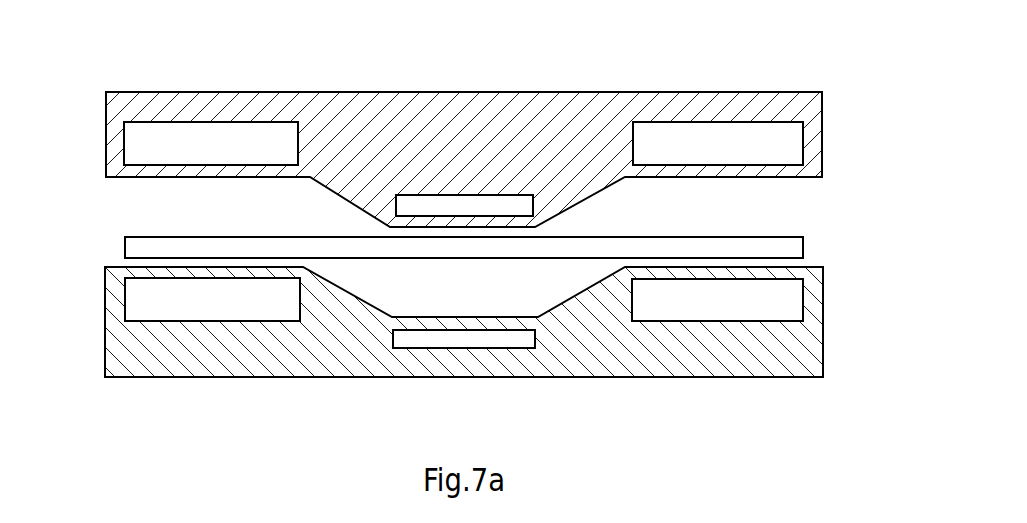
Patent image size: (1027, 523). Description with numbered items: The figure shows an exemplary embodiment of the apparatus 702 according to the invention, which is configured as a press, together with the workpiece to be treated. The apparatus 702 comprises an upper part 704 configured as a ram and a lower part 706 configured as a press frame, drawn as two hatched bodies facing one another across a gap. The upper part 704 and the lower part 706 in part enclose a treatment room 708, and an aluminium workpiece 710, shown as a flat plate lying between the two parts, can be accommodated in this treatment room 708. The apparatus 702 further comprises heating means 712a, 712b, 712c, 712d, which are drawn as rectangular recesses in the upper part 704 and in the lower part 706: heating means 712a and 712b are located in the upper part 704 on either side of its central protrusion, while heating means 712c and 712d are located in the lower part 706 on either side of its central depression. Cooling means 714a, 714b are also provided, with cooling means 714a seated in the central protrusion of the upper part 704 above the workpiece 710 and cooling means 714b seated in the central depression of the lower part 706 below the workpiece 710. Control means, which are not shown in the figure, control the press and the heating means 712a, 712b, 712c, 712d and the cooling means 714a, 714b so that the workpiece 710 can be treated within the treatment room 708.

The apparatus 702 is at (623, 72).
The upper part 704 is at (135, 107).
The lower part 706 is at (135, 365).
The treatment room 708 is at (118, 207).
The aluminium workpiece 710 is at (140, 248).
The heating means 712a is at (203, 138).
The heating means 712b is at (725, 138).
The heating means 712c is at (210, 302).
The heating means 712d is at (720, 302).
The cooling means 714a is at (430, 203).
The cooling means 714b is at (432, 338).